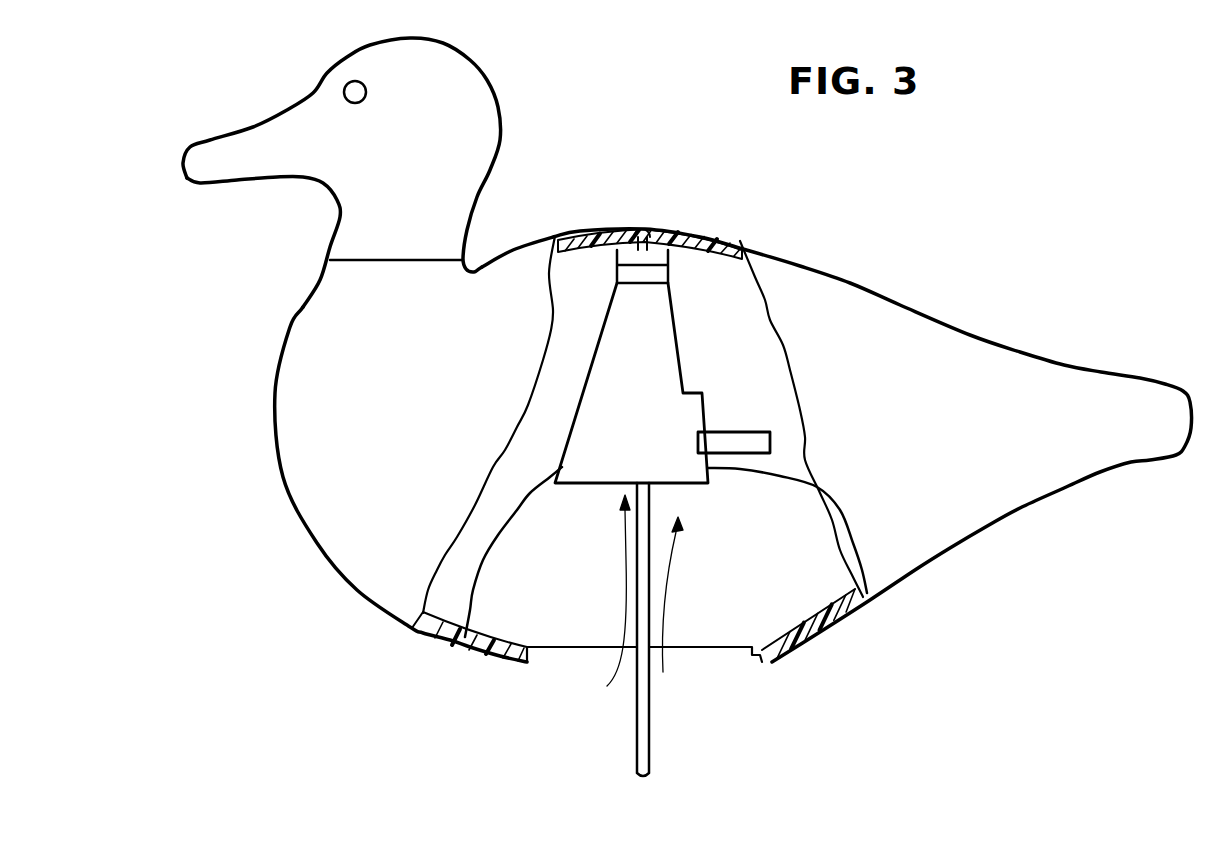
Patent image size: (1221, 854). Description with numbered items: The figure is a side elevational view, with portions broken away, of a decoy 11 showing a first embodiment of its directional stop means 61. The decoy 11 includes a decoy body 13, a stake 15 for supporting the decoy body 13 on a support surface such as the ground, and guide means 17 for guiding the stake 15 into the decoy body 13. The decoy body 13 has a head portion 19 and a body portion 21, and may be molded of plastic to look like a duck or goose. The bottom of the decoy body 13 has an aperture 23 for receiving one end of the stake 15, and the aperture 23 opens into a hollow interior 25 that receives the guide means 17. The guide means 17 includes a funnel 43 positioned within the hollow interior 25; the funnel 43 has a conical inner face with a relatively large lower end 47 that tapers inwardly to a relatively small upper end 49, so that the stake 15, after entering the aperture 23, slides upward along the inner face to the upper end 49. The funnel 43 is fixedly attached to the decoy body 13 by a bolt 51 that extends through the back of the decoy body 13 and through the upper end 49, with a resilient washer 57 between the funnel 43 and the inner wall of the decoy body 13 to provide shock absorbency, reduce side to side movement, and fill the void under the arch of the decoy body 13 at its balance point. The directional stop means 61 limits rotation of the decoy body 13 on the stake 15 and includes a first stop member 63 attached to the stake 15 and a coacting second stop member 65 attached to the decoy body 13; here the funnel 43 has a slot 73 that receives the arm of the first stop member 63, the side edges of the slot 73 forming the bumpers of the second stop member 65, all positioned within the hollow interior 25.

The decoy 11 is at (1003, 180).
The decoy body 13 is at (1039, 341).
The stake 15 is at (670, 740).
The guide means 17 is at (603, 599).
The head portion 19 is at (477, 130).
The body portion 21 is at (894, 333).
The aperture 23 is at (750, 660).
The hollow interior 25 is at (754, 578).
The funnel 43 is at (453, 638).
The lower end 47 is at (575, 483).
The upper end 49 is at (674, 294).
The bolt 51 is at (652, 199).
The resilient washer 57 is at (613, 253).
The directional stop means 61 is at (683, 606).
The first stop member 63 is at (710, 405).
The second stop member 65 is at (911, 620).
The slot 73 is at (740, 437).